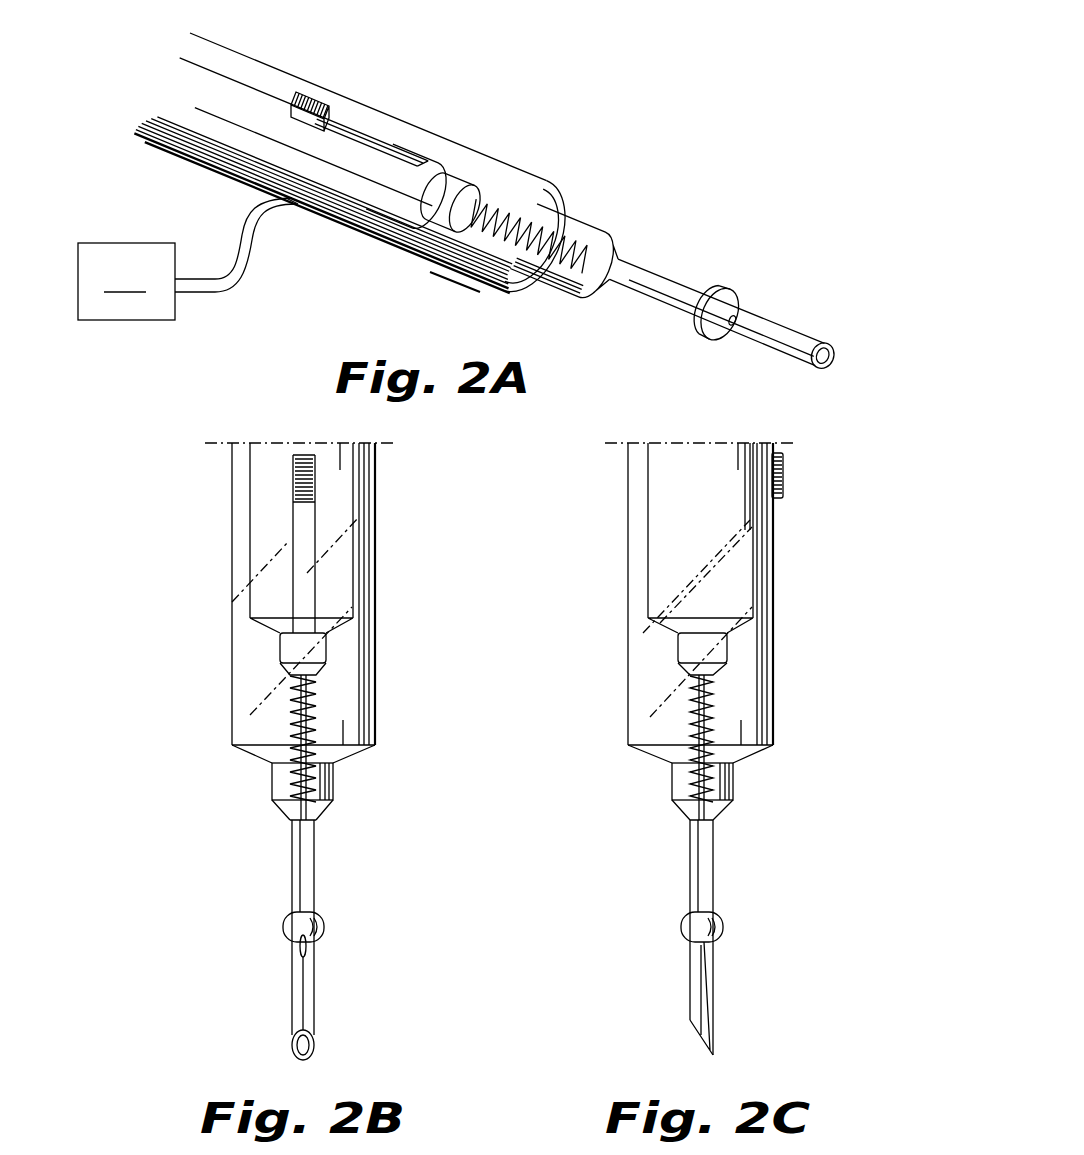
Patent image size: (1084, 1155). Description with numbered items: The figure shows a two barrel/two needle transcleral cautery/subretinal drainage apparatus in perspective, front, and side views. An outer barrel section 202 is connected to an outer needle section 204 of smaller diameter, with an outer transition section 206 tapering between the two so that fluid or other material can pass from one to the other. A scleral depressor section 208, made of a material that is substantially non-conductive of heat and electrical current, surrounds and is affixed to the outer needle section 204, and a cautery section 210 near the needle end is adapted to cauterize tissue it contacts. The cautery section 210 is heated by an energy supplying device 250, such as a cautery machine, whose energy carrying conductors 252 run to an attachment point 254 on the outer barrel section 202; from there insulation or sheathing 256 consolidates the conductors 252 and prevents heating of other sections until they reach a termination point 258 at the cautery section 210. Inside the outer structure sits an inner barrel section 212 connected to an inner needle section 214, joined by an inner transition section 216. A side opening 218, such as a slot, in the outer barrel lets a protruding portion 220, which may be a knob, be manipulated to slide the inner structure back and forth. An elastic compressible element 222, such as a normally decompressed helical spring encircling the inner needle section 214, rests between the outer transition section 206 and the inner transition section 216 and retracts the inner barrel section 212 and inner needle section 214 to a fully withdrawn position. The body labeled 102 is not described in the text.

In FIG. 2C, the biopsy device housing 102 is at (772, 598).
In FIG. 2A, the outer barrel section 202 is at (383, 117).
In FIG. 2B, the outer barrel section 202 is at (375, 600).
In FIG. 2A, the outer needle section 204 is at (826, 400).
In FIG. 2B, the outer needle section 204 is at (413, 820).
In FIG. 2C, the outer needle section 204 is at (815, 820).
In FIG. 2A, the outer transition section 206 is at (637, 197).
In FIG. 2B, the outer transition section 206 is at (222, 748).
In FIG. 2C, the outer transition section 206 is at (618, 748).
In FIG. 2A, the scleral depressor section 208 is at (713, 292).
In FIG. 2B, the scleral depressor section 208 is at (325, 928).
In FIG. 2C, the scleral depressor section 208 is at (725, 928).
In FIG. 2A, the cautery section 210 is at (879, 294).
In FIG. 2B, the cautery section 210 is at (222, 940).
In FIG. 2C, the cautery section 210 is at (632, 940).
In FIG. 2A, the inner barrel section 212 is at (250, 92).
In FIG. 2B, the inner barrel section 212 is at (250, 567).
In FIG. 2C, the inner barrel section 212 is at (648, 563).
In FIG. 2B, the inner needle section 214 is at (293, 732).
In FIG. 2C, the inner needle section 214 is at (692, 732).
In FIG. 2A, the inner transition section 216 is at (462, 200).
In FIG. 2B, the inner transition section 216 is at (328, 647).
In FIG. 2C, the inner transition section 216 is at (725, 647).
In FIG. 2A, the side opening 218 is at (410, 150).
In FIG. 2B, the side opening 218 is at (302, 562).
In FIG. 2C, the side opening 218 is at (772, 532).
In FIG. 2B, the protruding portion 220 is at (290, 468).
In FIG. 2C, the protruding portion 220 is at (785, 473).
In FIG. 2B, the elastic compressible element 222 is at (293, 705).
In FIG. 2C, the elastic compressible element 222 is at (692, 705).
In FIG. 2A, the energy supplying device 250 is at (126, 281).
In FIG. 2A, the energy carrying conductors 252 is at (233, 277).
In FIG. 2A, the attachment point 254 is at (293, 204).
In FIG. 2A, the insulation or sheathing 256 is at (457, 267).
In FIG. 2A, the termination point 258 is at (770, 342).